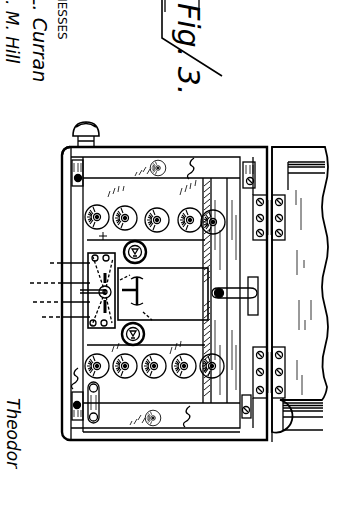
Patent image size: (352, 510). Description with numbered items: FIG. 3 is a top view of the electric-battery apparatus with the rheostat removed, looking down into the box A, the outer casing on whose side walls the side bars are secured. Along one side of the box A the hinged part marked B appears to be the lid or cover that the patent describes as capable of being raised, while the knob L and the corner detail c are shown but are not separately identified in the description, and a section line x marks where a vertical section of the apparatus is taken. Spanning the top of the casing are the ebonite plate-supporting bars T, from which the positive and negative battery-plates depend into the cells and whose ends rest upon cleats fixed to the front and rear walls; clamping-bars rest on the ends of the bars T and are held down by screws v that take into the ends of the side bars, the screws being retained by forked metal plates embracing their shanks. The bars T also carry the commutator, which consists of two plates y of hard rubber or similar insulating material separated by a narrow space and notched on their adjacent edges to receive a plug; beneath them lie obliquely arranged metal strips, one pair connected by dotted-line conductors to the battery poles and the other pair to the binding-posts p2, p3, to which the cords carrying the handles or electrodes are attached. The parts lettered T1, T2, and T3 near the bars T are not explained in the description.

The box A is at (164, 293).
The lid B is at (307, 289).
The knob L is at (95, 129).
The casing corner c is at (84, 162).
The screw v is at (247, 173).
The section line x is at (330, 310).
The hard-rubber plate y is at (63, 290).
The plate-supporting bar T is at (163, 294).
The plate lug T1 is at (143, 300).
The plate slot T2 is at (132, 283).
The plate slot T3 is at (154, 316).
The binding-post p2 is at (144, 252).
The binding-post p3 is at (142, 334).